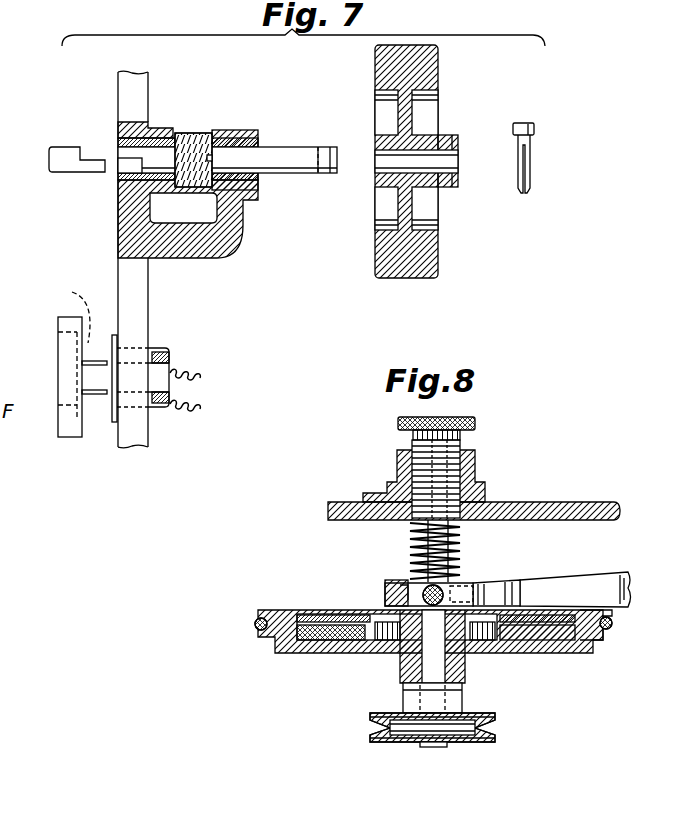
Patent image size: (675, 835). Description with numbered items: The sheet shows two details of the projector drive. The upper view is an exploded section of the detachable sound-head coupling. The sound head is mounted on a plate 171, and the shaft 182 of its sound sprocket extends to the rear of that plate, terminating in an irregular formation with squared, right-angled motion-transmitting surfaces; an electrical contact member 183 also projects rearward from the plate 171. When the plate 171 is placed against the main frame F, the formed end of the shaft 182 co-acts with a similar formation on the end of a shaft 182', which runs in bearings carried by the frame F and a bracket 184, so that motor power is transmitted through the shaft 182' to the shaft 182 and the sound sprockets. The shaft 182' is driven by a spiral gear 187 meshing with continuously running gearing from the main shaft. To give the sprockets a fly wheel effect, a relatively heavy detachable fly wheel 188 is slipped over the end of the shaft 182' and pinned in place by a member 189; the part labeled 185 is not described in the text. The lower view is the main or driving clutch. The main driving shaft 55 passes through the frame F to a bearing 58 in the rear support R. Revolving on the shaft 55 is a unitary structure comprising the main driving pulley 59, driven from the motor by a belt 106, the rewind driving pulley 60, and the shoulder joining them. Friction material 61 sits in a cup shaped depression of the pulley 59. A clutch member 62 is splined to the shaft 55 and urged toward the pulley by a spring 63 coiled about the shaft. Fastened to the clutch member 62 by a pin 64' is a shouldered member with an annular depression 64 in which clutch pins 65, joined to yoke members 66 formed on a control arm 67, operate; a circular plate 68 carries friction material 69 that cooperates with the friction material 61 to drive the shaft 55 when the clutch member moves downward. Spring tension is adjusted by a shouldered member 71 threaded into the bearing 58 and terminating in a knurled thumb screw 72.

In FIG. 7, the supporting frame F is at (148, 82).
In FIG. 7, the sprocket shaft 182 is at (77, 143).
In FIG. 7, the driving shaft 182' is at (227, 140).
In FIG. 7, the bracket 184 is at (225, 130).
In FIG. 7, the spiral gear 187 is at (193, 133).
In FIG. 7, the fly wheel 188 is at (440, 71).
In FIG. 7, the pin member 189 is at (521, 125).
In FIG. 7, the electrical contact member 183 is at (66, 308).
In FIG. 7, the plate 171 is at (58, 330).
In FIG. 7, the stud with springs 185 is at (157, 350).
In FIG. 8, the knurled thumb screw 72 is at (398, 422).
In FIG. 8, the shouldered member 71 is at (412, 447).
In FIG. 8, the bearing 58 is at (477, 459).
In FIG. 8, the rear support R is at (530, 502).
In FIG. 8, the spring 63 is at (412, 542).
In FIG. 8, the annular depression 64 is at (373, 582).
In FIG. 8, the pin 64' is at (393, 574).
In FIG. 8, the clutch pins 65 is at (420, 595).
In FIG. 8, the clutch member 62 is at (470, 582).
In FIG. 8, the yoke members 66 is at (497, 585).
In FIG. 8, the control arm 67 is at (585, 578).
In FIG. 8, the main driving pulley 59 is at (612, 618).
In FIG. 8, the belt 106 is at (254, 627).
In FIG. 8, the circular plate 68 is at (322, 612).
In FIG. 8, the friction material 69 is at (300, 615).
In FIG. 8, the friction material 61 is at (320, 643).
In FIG. 8, the main driving shaft 55 is at (447, 666).
In FIG. 8, the rewind driving pulley 60 is at (498, 735).